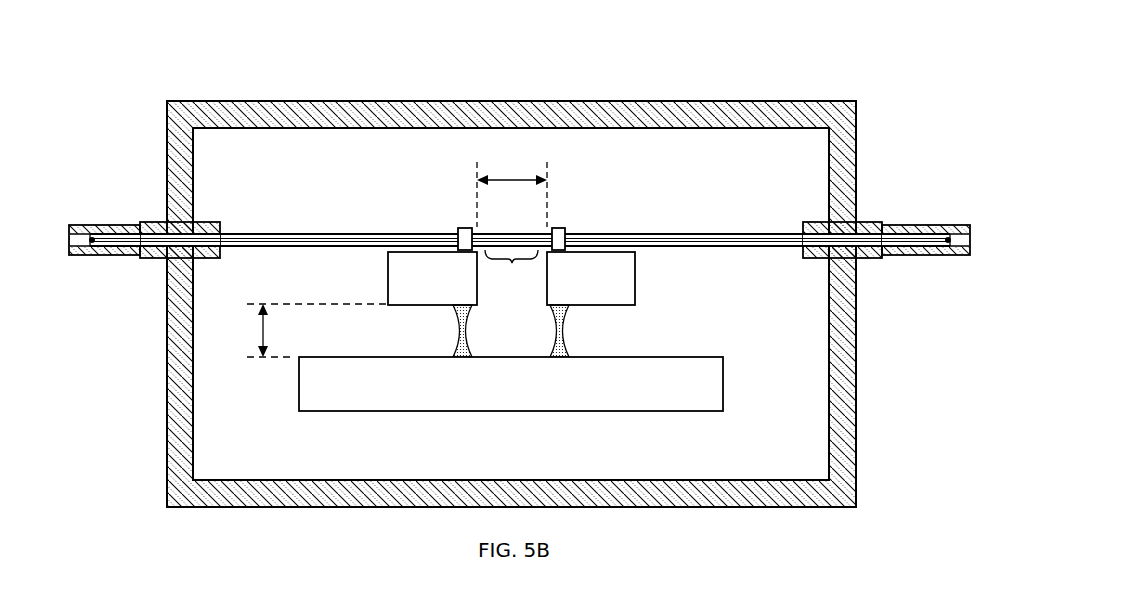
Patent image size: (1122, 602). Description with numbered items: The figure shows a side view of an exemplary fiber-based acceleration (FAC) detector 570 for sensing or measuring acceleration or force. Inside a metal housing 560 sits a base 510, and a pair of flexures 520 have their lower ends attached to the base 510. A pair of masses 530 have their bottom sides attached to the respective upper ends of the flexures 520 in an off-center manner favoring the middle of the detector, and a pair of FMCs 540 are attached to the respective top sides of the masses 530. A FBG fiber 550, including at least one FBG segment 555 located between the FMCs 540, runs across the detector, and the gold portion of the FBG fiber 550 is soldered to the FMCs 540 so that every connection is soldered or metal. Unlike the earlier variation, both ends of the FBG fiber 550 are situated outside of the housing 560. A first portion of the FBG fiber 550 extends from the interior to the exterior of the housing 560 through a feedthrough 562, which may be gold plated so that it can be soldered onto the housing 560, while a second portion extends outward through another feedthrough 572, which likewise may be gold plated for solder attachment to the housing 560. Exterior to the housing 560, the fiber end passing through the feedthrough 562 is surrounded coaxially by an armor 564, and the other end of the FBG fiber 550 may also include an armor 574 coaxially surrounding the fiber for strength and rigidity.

The base 510 is at (511, 384).
The flexures 520 is at (454, 330).
The masses 530 is at (388, 277).
The FMCs 540 is at (466, 228).
The FBG fiber 550 is at (689, 226).
The FBG segment 555 is at (511, 271).
The housing 560 is at (334, 101).
The feedthrough 562 is at (867, 222).
The armor 564 is at (955, 258).
The fiber-based acceleration (FAC) detector 570 is at (594, 60).
The feedthrough 572 is at (158, 222).
The armor 574 is at (87, 258).